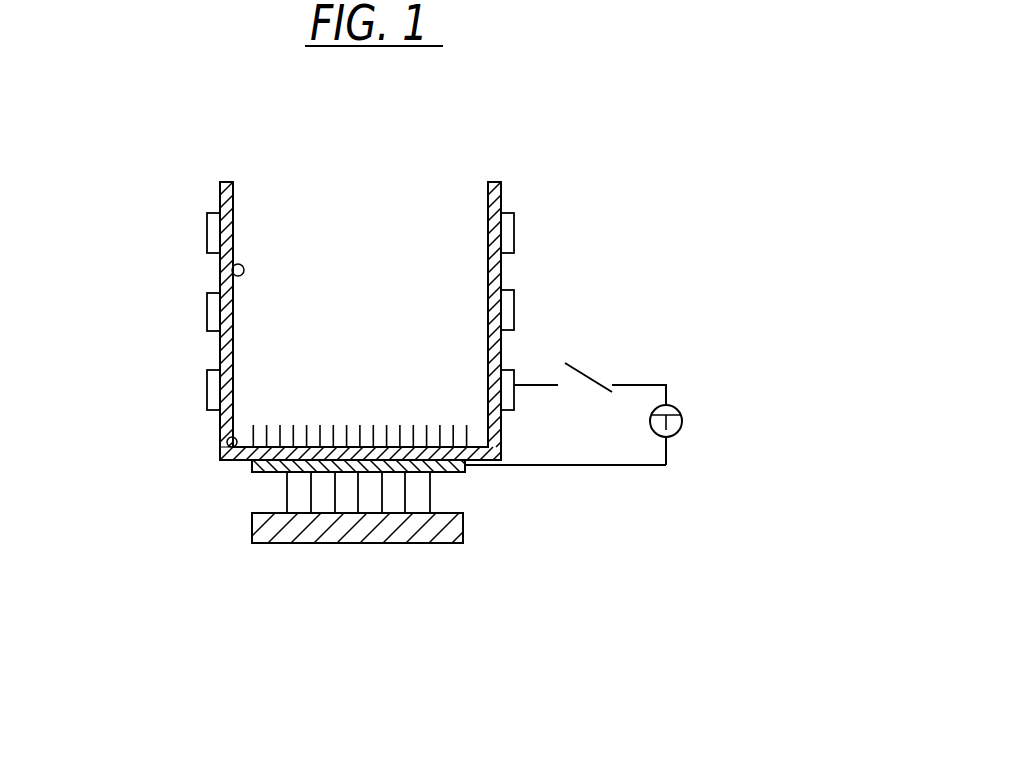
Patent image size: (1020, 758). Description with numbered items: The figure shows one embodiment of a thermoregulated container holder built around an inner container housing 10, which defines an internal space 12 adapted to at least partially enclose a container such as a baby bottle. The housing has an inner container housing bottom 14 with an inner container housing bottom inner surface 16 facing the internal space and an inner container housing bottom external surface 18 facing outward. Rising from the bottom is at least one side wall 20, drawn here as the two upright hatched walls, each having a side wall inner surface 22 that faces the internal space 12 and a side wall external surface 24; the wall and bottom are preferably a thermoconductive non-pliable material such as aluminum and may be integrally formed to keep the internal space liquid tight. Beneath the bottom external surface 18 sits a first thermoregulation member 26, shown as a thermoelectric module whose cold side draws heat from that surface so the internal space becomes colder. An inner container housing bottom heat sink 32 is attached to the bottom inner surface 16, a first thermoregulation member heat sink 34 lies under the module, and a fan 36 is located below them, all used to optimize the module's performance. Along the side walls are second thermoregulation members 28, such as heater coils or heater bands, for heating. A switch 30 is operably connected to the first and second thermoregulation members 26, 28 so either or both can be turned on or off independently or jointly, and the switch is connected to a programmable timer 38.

The inner container housing 10 is at (497, 176).
The internal space 12 is at (427, 200).
The inner container housing bottom 14 is at (225, 460).
The inner container housing bottom inner surface 16 is at (228, 442).
The inner container housing bottom external surface 18 is at (228, 463).
The side wall 20 is at (223, 187).
The side wall inner surface 22 is at (235, 264).
The side wall external surface 24 is at (222, 340).
The first thermoregulation member 26 is at (453, 472).
The second thermoregulation member 28 is at (514, 220).
The switch 30 is at (588, 373).
The inner container housing bottom heat sink 32 is at (433, 410).
The first thermoregulation member heat sink 34 is at (430, 490).
The fan 36 is at (448, 543).
The timer 38 is at (682, 421).